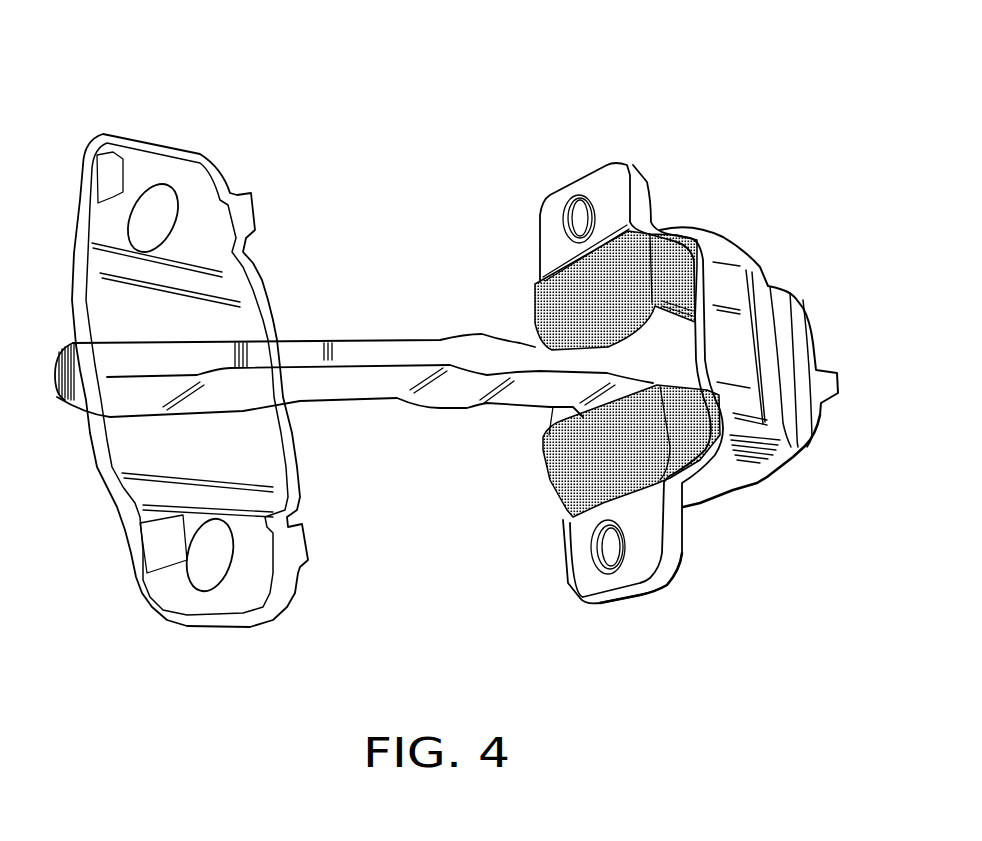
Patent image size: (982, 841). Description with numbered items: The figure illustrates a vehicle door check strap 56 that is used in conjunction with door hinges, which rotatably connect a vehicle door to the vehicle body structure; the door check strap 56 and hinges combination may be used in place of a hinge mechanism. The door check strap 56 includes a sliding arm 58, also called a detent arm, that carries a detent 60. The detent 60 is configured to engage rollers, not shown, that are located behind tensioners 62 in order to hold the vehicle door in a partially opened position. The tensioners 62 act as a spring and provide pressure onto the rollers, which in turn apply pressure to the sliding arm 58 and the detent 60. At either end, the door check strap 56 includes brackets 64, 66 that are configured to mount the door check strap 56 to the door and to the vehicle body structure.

The door check strap 56 is at (498, 76).
The sliding arm 58 is at (315, 402).
The detent 60 is at (483, 337).
The tensioners 62 is at (545, 318).
The bracket 64 is at (670, 585).
The bracket 66 is at (224, 627).